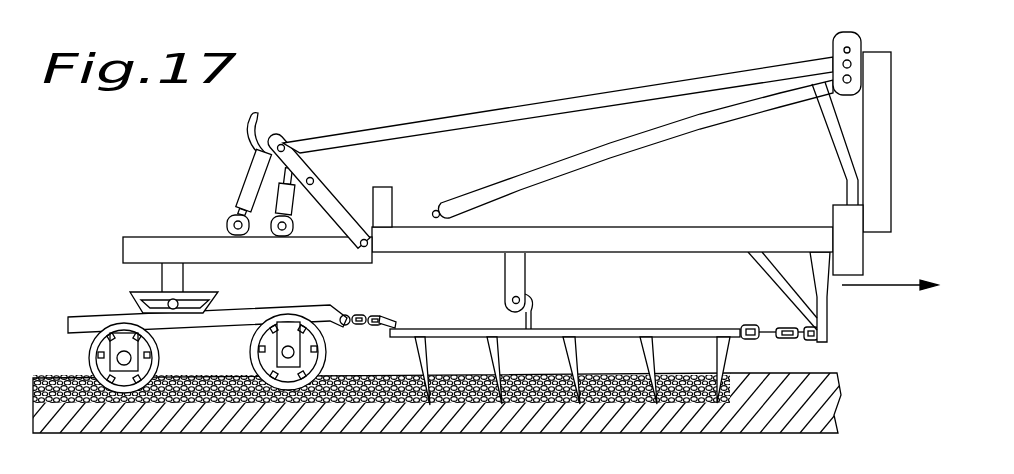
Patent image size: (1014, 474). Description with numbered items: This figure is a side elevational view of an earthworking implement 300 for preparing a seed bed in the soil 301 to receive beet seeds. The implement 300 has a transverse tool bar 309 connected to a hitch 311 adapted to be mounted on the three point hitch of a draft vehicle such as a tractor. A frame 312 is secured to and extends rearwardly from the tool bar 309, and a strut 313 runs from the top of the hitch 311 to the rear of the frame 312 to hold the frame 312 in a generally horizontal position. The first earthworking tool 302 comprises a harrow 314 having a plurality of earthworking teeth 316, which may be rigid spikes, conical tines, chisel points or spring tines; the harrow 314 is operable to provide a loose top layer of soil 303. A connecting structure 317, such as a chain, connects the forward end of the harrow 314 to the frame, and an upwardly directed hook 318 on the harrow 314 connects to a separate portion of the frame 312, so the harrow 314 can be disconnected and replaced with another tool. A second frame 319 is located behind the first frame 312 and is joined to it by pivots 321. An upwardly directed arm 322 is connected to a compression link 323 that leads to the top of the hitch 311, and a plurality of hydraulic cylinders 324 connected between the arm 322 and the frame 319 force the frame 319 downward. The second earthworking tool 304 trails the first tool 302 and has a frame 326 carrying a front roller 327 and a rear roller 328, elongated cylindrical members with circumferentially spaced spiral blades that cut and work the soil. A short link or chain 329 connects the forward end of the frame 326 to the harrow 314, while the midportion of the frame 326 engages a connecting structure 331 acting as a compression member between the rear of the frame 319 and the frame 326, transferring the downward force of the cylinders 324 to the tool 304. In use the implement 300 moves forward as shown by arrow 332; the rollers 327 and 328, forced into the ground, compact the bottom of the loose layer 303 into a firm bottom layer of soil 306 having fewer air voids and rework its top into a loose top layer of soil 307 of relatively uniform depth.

The earthworking implement 300 is at (546, 88).
The soil 301 is at (817, 403).
The first earthworking tool 302 is at (610, 328).
The loose top layer of soil 303 is at (388, 380).
The second earthworking tool 304 is at (209, 310).
The compact bottom layer of soil 306 is at (33, 400).
The loose top layer of soil 307 is at (58, 376).
The transverse tool bar 309 is at (843, 203).
The hitch 311 is at (880, 135).
The frame 312 is at (719, 230).
The strut 313 is at (578, 169).
The harrow 314 is at (483, 331).
The earthworking teeth 316 is at (563, 355).
The connecting structure 317 is at (787, 325).
The upwardly directed hook 318 is at (535, 308).
The second frame 319 is at (159, 239).
The pivots 321 is at (363, 249).
The upwardly directed arm 322 is at (327, 188).
The compression link 323 is at (447, 122).
The hydraulic cylinders 324 is at (257, 195).
The frame 326 is at (262, 313).
The front roller 327 is at (252, 341).
The rear roller 328 is at (159, 362).
The short link or chain 329 is at (370, 306).
The pivot bracket 331 is at (182, 300).
The direction of travel arrow 332 is at (880, 288).